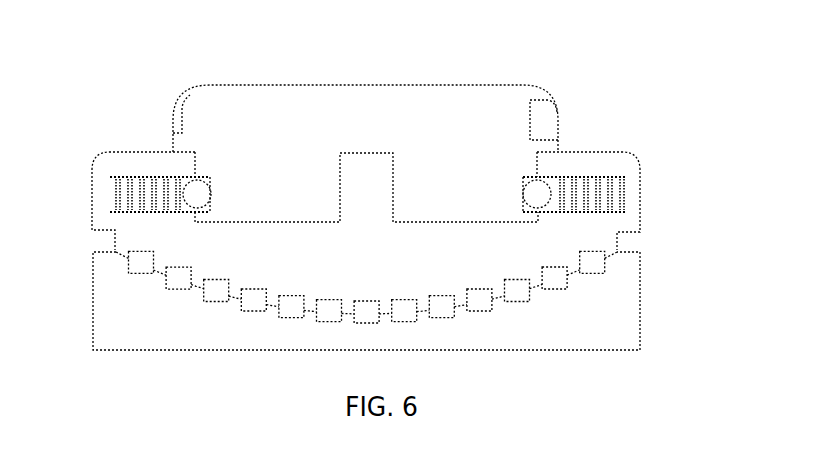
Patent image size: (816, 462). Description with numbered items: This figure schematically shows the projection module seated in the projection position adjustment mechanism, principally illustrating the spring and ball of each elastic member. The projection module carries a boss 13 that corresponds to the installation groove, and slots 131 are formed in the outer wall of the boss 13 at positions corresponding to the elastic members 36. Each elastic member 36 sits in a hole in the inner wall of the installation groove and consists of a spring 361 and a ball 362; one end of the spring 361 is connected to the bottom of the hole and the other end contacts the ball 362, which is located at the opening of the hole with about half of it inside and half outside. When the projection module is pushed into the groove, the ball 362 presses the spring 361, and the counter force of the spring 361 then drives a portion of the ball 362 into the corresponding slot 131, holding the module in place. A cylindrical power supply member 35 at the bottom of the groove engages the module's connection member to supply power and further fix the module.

The boss 13 is at (197, 163).
The slot 131 is at (208, 175).
The power supply member 35 is at (380, 167).
The elastic member 36 is at (153, 195).
The spring 361 is at (612, 198).
The ball 362 is at (543, 205).